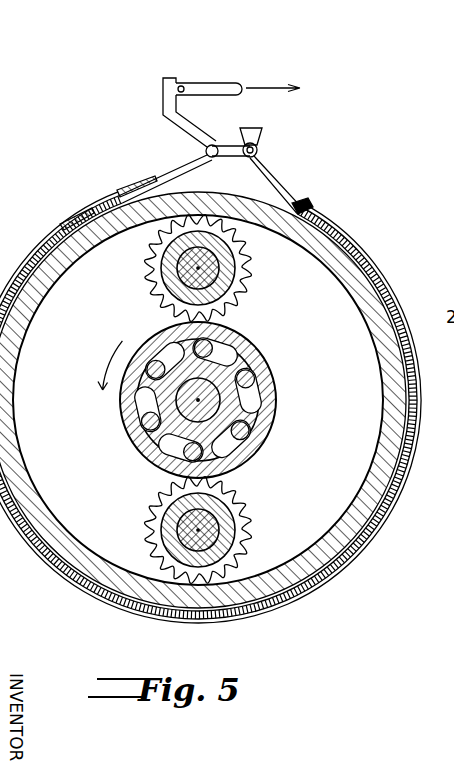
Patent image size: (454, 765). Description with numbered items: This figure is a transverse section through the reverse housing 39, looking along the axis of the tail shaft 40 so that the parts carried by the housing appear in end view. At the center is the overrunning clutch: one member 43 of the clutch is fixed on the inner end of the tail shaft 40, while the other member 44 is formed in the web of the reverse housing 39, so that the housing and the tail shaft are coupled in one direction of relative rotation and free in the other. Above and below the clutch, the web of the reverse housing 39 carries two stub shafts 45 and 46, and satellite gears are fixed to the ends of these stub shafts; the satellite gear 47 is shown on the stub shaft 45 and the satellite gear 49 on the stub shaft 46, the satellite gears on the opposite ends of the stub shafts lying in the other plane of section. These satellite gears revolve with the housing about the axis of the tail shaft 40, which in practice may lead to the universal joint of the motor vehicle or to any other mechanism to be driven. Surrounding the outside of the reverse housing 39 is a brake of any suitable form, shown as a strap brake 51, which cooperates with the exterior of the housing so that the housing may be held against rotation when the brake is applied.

The reverse housing 39 is at (42, 302).
The tail shaft 40 is at (180, 389).
The overrunning clutch member 43 is at (251, 349).
The overrunning clutch member 44 is at (235, 413).
The stub shaft 45 is at (217, 274).
The stub shaft 46 is at (212, 527).
The satellite gear 47 is at (252, 294).
The satellite gear 49 is at (252, 536).
The strap brake 51 is at (323, 591).